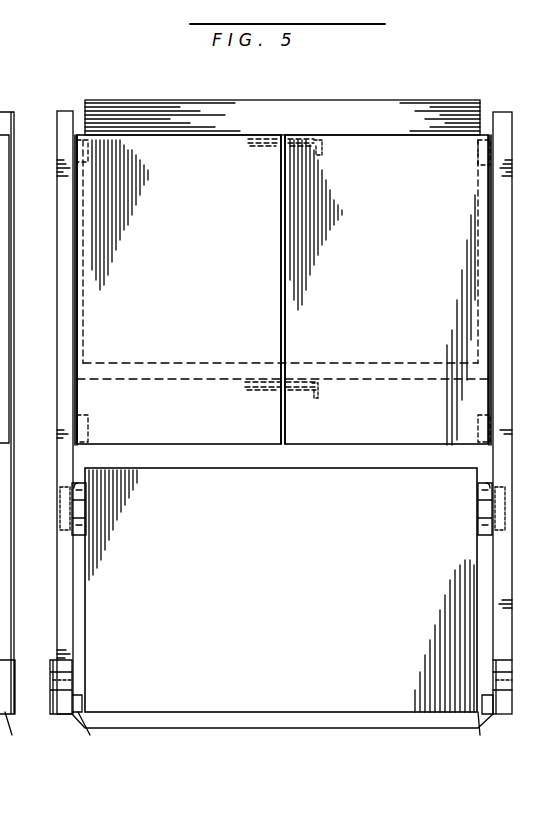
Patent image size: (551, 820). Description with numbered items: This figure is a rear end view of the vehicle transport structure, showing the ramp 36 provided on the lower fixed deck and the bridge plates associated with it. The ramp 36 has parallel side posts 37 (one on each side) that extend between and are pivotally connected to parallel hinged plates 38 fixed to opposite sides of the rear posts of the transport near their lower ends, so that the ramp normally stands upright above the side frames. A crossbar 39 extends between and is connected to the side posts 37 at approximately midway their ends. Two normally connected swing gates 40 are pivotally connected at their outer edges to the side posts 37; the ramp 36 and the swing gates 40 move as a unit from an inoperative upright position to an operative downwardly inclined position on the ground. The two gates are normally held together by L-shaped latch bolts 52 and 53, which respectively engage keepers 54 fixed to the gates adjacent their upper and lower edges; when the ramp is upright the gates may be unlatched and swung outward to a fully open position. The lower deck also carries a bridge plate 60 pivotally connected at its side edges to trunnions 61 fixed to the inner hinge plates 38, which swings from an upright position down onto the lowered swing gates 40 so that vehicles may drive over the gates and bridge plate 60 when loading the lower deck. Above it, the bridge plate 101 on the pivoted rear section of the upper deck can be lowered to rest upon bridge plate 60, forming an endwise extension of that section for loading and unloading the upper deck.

The bridge plate 101 is at (400, 107).
The swing gate 40 is at (226, 428).
The crossbar 39 is at (385, 380).
The L-shaped latch bolt 53 is at (320, 158).
The keeper 54 is at (260, 395).
The L-shaped latch bolt 52 is at (322, 390).
The ramp 36 is at (48, 442).
The side post 37 is at (57, 574).
The hinged plate 38 is at (48, 678).
The bridge plate 60 is at (383, 690).
The trunnion 61 is at (246, 736).